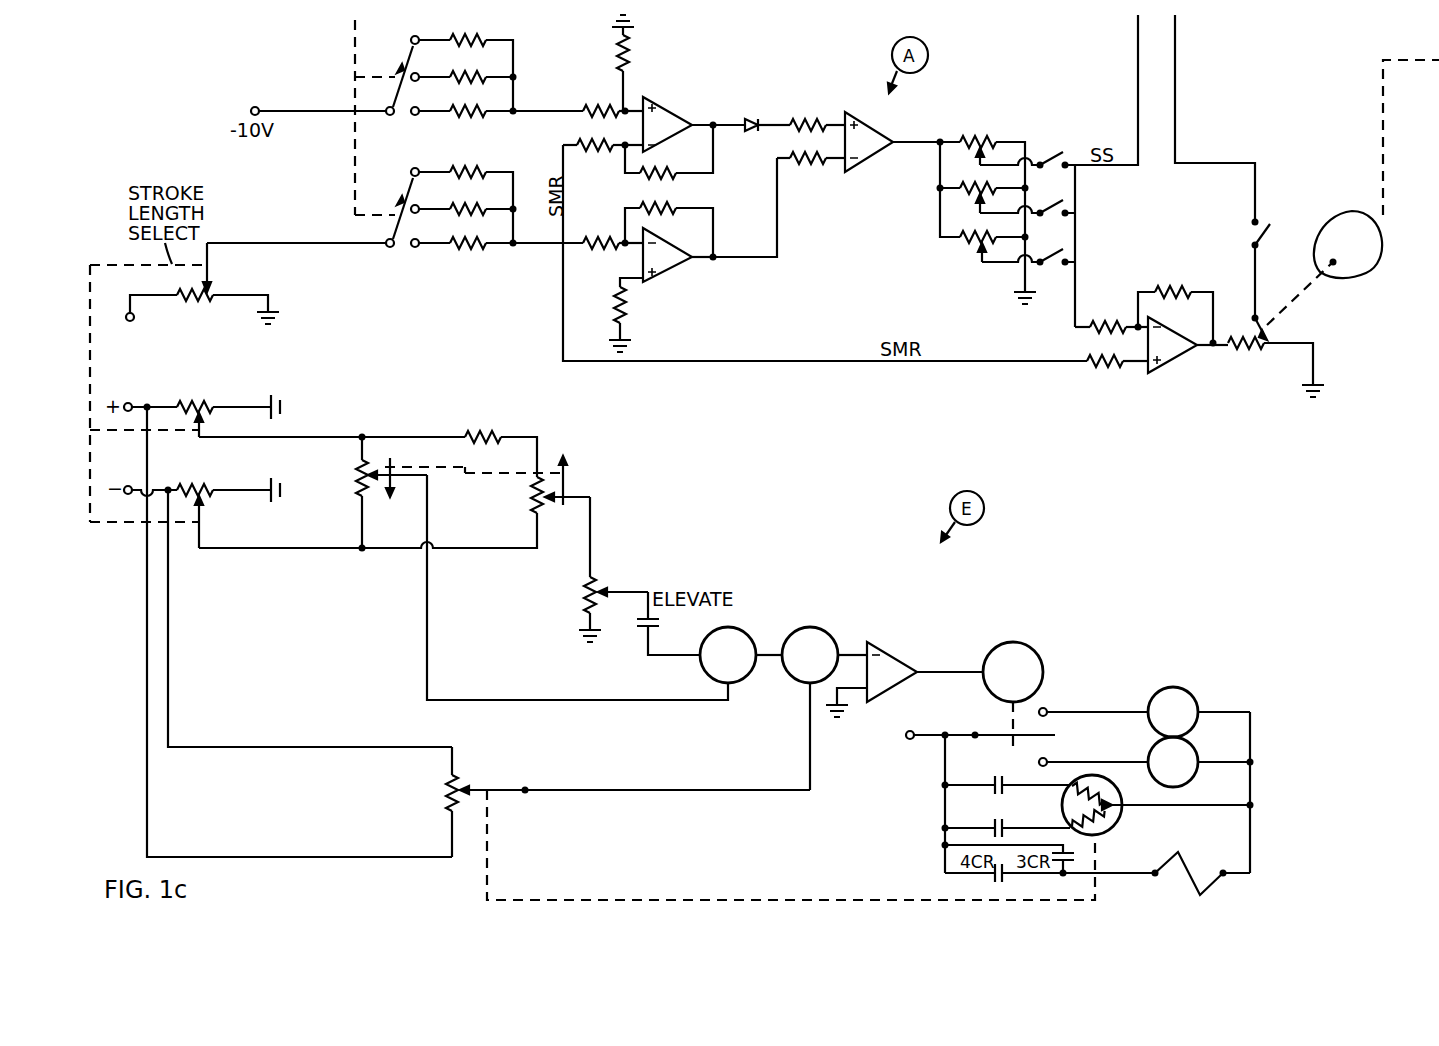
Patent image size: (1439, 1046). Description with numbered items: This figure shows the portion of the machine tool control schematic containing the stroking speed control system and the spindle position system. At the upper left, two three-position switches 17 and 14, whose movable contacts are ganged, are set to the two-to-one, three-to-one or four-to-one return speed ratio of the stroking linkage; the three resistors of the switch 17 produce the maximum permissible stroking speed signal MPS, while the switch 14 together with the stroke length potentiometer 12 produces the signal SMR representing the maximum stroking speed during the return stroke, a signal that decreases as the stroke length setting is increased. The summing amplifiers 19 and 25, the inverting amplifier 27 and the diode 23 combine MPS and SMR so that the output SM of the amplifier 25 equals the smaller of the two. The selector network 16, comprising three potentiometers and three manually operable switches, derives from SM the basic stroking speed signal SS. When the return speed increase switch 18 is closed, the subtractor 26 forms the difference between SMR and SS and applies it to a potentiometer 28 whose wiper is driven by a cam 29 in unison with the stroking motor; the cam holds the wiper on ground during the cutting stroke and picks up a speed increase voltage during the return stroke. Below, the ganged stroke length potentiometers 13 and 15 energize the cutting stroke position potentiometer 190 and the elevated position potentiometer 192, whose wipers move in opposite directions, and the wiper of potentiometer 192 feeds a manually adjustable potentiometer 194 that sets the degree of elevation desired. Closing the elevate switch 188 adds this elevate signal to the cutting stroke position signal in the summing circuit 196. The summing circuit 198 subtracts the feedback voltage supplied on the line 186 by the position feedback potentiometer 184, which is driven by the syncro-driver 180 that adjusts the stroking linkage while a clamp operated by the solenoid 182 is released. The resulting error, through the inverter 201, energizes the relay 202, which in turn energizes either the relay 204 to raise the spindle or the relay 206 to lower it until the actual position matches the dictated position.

The stroke length potentiometer 12 is at (186, 300).
The stroke length potentiometer 13 is at (205, 486).
The three-position switch 14 is at (470, 170).
The stroke length potentiometer 15 is at (205, 403).
The selector network 16 is at (968, 247).
The three-position switch 17 is at (468, 38).
The return speed increase switch 18 is at (1263, 238).
The summing amplifier 19 is at (629, 97).
The diode 23 is at (750, 118).
The summing amplifier 25 is at (826, 184).
The subtractor 26 is at (1151, 329).
The inverting amplifier 27 is at (646, 277).
The potentiometer 28 is at (1252, 350).
The cam 29 is at (1360, 268).
The syncro-driver 180 is at (1113, 830).
The solenoid 182 is at (1184, 863).
The position feedback potentiometer 184 is at (447, 797).
The line 186 is at (666, 780).
The elevate switch 188 is at (641, 634).
The cutting stroke position potentiometer 190 is at (358, 480).
The elevated position potentiometer 192 is at (536, 512).
The potentiometer 194 is at (586, 598).
The summing circuit 196 is at (731, 630).
The summing circuit 198 is at (819, 630).
The inverter 201 is at (904, 679).
The relay 202 is at (1017, 644).
The relay 204 is at (1192, 694).
The relay 206 is at (1196, 749).